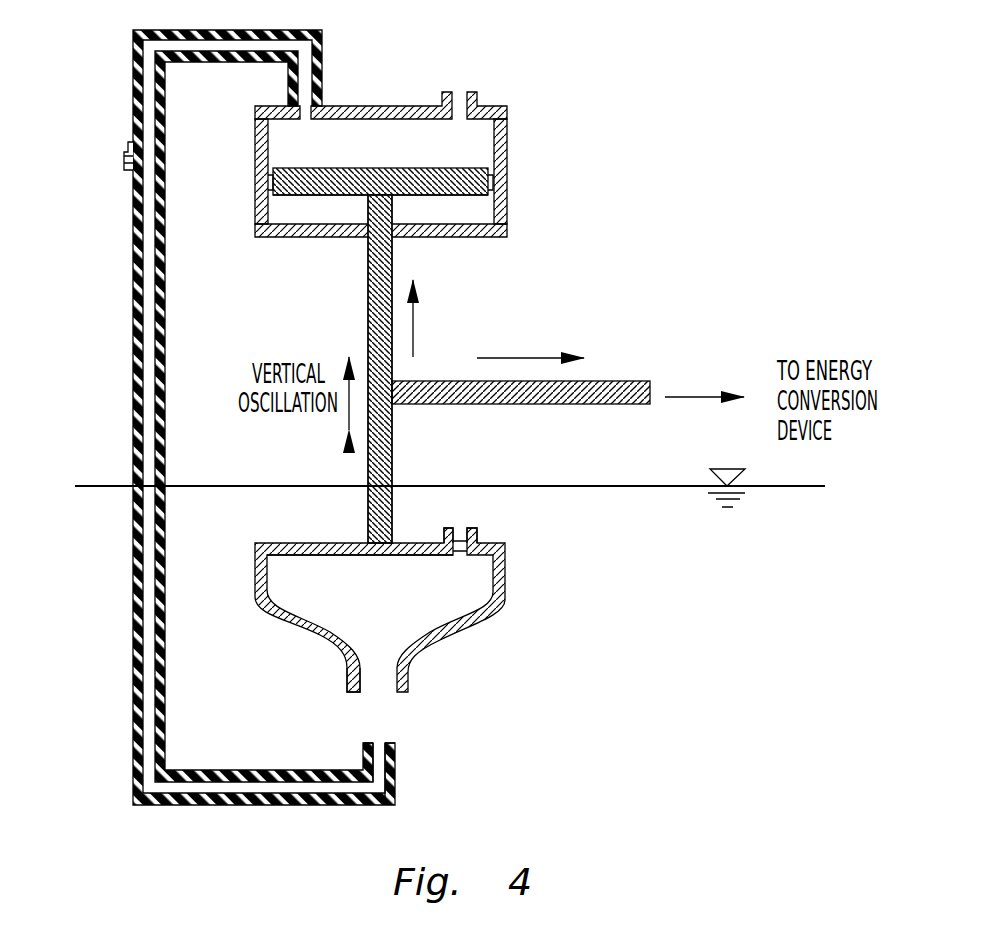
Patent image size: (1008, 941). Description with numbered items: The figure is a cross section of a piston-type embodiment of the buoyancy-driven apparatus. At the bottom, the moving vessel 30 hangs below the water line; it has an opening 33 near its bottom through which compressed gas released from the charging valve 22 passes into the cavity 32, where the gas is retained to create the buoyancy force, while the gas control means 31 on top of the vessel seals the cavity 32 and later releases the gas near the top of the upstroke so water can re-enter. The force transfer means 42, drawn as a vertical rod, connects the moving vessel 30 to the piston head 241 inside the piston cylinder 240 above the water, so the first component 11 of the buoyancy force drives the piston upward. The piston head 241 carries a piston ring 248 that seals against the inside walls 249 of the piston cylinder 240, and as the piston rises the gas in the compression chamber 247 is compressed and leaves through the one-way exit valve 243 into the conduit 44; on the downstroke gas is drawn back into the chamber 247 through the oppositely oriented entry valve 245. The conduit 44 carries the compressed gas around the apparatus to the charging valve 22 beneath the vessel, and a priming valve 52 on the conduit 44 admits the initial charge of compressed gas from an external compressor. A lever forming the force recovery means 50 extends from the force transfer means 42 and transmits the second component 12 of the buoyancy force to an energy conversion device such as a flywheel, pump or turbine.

The first component 11 is at (413, 316).
The second component 12 is at (543, 358).
The charging valve 22 is at (385, 743).
The moving vessel 30 is at (505, 590).
The gas control means 31 is at (477, 538).
The cavity 32 is at (397, 612).
The opening 33 is at (363, 692).
The force transfer means 42 is at (392, 468).
The conduit 44 is at (134, 298).
The force recovery means 50 is at (545, 404).
The priming valve 52 is at (130, 143).
The piston cylinder 240 is at (255, 200).
The piston head 241 is at (318, 197).
The exit valve 243 is at (320, 100).
The entry valve 245 is at (477, 97).
The compression chamber 247 is at (403, 156).
The piston ring 248 is at (490, 170).
The inside walls 249 is at (480, 240).